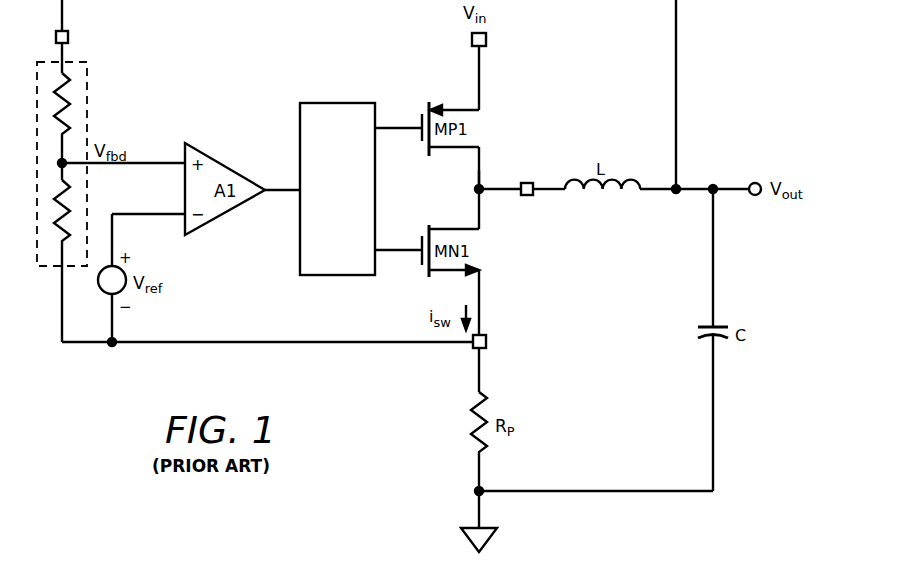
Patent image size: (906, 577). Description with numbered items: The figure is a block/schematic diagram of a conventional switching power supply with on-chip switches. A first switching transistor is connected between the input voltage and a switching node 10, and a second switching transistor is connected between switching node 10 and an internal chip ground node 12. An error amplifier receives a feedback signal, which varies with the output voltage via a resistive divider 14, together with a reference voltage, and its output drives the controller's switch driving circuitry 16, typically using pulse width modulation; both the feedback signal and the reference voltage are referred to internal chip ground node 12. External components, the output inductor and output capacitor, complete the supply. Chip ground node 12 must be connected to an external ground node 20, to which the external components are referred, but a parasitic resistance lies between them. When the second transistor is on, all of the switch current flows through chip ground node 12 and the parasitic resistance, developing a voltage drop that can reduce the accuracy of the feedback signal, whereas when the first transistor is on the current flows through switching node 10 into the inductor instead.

The resistive divider 14 is at (87, 87).
The switch driving circuitry 16 is at (338, 103).
The switching node 10 is at (470, 190).
The internal chip ground node 12 is at (487, 342).
The external ground node 20 is at (470, 491).